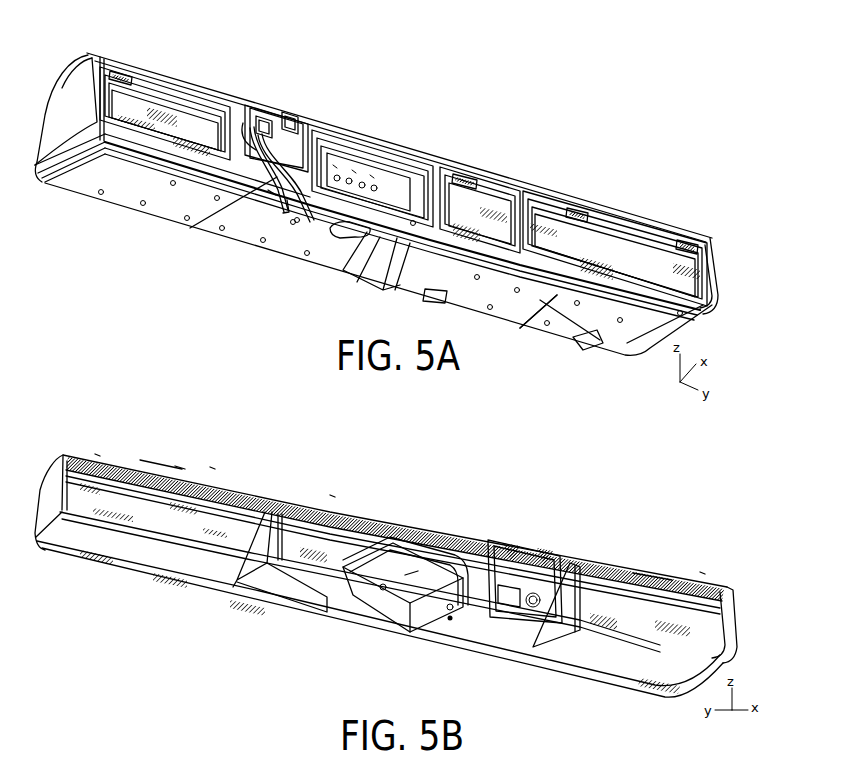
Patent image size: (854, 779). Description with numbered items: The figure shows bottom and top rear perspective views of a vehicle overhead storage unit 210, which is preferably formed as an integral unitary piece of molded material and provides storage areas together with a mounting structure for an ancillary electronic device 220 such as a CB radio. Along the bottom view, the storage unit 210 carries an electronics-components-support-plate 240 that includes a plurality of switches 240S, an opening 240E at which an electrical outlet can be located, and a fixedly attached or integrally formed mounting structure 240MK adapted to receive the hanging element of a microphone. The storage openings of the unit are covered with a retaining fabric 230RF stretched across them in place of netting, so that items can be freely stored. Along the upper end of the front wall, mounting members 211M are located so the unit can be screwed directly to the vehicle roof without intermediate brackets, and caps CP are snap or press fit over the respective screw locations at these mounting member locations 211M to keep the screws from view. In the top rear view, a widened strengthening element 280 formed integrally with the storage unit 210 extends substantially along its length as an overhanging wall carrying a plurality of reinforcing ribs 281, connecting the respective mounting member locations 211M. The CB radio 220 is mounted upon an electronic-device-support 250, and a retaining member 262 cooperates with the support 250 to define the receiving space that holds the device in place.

In FIG. 5A, the storage unit 210 is at (724, 201).
In FIG. 5B, the storage unit 210 is at (739, 561).
In FIG. 5A, the electronics-components-support-plate 240 is at (242, 126).
In FIG. 5A, the mounting structure 240MK is at (319, 132).
In FIG. 5A, the switches 240S is at (279, 197).
In FIG. 5A, the opening 240E is at (272, 192).
In FIG. 5A, the retaining fabric 230RF is at (575, 258).
In FIG. 5A, the caps CP is at (125, 64).
In FIG. 5B, the mounting members 211M is at (98, 441).
In FIG. 5B, the reinforcing ribs 281 is at (180, 467).
In FIG. 5B, the strengthening element 280 is at (181, 467).
In FIG. 5B, the retaining member 262 is at (447, 529).
In FIG. 5B, the electronic-device-support 250 is at (422, 630).
In FIG. 5B, the ancillary-electronic-device 220 is at (412, 573).